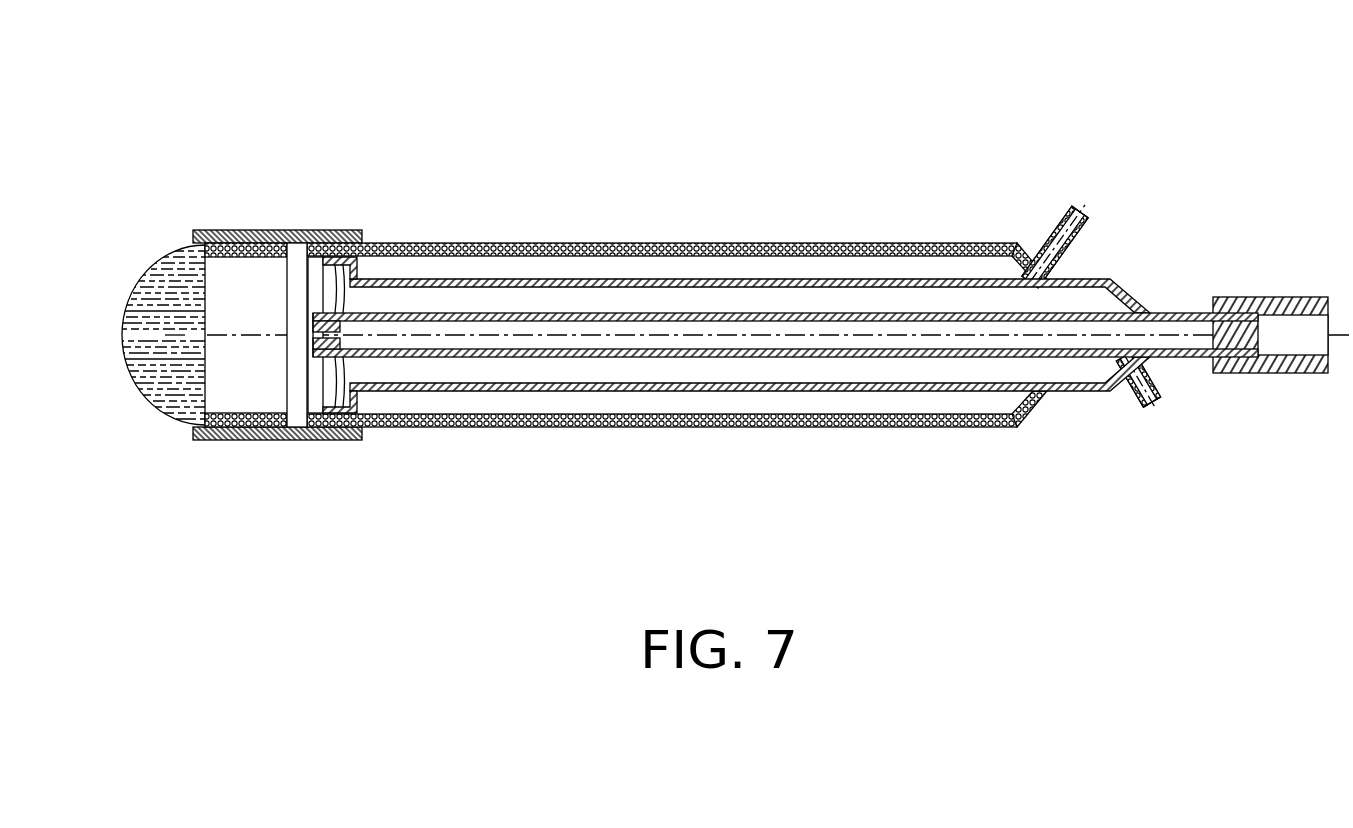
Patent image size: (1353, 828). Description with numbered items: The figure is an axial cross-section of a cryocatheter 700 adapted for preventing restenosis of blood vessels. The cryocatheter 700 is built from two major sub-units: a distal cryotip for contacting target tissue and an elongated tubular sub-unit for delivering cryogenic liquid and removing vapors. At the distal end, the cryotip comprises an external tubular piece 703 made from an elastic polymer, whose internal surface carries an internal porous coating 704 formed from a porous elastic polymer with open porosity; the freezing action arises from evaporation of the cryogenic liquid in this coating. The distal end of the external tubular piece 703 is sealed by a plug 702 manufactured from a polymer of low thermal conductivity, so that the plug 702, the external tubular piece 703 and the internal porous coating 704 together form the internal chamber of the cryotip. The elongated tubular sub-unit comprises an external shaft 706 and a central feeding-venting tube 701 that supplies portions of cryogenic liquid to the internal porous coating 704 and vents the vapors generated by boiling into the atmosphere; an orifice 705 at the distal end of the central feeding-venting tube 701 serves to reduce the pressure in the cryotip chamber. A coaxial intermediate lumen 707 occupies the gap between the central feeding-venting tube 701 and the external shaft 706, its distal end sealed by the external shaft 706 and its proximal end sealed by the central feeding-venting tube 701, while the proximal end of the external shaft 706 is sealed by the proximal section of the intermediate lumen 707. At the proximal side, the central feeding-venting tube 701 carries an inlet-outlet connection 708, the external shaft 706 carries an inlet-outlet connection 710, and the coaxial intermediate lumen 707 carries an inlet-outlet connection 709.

The cryocatheter 700 is at (727, 351).
The central feeding-venting tube 701 is at (800, 360).
The plug 702 is at (131, 373).
The external tubular piece 703 is at (228, 443).
The internal porous coating 704 is at (227, 230).
The orifice 705 is at (350, 230).
The external shaft 706 is at (630, 243).
The coaxial intermediate lumen 707 is at (858, 278).
The inlet-outlet connection 708 is at (1240, 297).
The inlet-outlet connection 709 is at (1122, 402).
The inlet-outlet connection 710 is at (1043, 222).